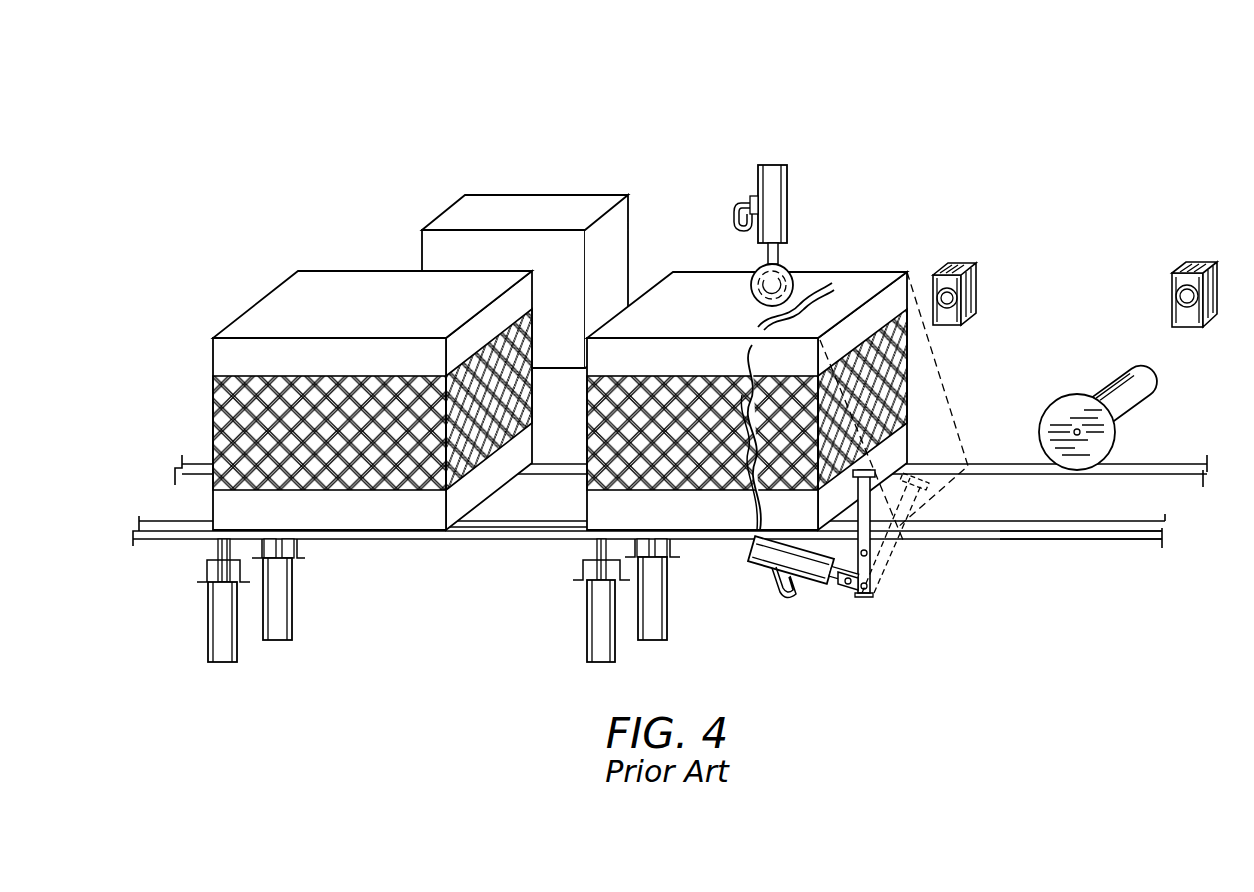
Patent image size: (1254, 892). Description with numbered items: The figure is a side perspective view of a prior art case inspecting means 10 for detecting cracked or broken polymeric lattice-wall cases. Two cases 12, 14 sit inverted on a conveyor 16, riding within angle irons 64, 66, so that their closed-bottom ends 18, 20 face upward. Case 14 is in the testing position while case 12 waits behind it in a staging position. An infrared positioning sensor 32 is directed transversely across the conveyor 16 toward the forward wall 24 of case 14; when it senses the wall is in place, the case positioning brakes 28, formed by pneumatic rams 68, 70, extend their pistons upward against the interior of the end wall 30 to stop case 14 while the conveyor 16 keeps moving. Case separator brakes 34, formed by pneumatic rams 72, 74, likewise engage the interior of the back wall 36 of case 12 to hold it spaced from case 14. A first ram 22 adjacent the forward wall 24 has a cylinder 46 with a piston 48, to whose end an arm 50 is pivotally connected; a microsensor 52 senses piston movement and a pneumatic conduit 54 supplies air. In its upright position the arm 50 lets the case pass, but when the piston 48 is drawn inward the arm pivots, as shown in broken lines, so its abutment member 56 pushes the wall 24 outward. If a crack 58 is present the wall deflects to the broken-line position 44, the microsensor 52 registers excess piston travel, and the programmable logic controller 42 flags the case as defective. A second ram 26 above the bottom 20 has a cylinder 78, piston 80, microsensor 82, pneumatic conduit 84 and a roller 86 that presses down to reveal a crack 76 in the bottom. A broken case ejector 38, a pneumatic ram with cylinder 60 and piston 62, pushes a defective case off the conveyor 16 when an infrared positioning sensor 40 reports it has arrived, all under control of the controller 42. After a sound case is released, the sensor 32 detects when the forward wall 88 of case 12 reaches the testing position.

The case inspecting means 10 is at (930, 216).
The case 12 is at (365, 390).
The case 14 is at (770, 385).
The conveyor 16 is at (497, 540).
The closed-bottom end 18 is at (359, 313).
The closed-bottom end 20 is at (724, 316).
The first ram 22 is at (854, 538).
The forward wall 24 is at (887, 408).
The second ram 26 is at (778, 231).
The case positioning brakes 28 is at (628, 611).
The end wall 30 is at (586, 505).
The infrared positioning sensor 32 is at (978, 266).
The case separator brakes 34 is at (251, 611).
The back wall 36 is at (212, 422).
The broken case ejector 38 is at (1106, 406).
The infrared positioning sensor 40 is at (1175, 270).
The programmable logic controller 42 is at (628, 234).
The broken lines 44 is at (952, 380).
The cylinder 46 is at (760, 548).
The piston 48 is at (846, 586).
The arm 50 is at (912, 500).
The microsensor 52 is at (768, 578).
The pneumatic conduit 54 is at (776, 598).
The abutment member 56 is at (870, 472).
The crack 58 is at (752, 516).
The cylinder 60 is at (1072, 400).
The piston 62 is at (1128, 366).
The angle iron 64 is at (1170, 478).
The angle iron 66 is at (1082, 540).
The pneumatic ram 68 is at (600, 628).
The pneumatic ram 70 is at (660, 620).
The pneumatic ram 72 is at (222, 628).
The pneumatic ram 74 is at (283, 620).
The crack 76 is at (814, 297).
The cylinder 78 is at (784, 222).
The piston 80 is at (780, 255).
The microsensor 82 is at (738, 194).
The pneumatic conduit 84 is at (736, 205).
The roller 86 is at (764, 270).
The forward wall 88 is at (512, 460).